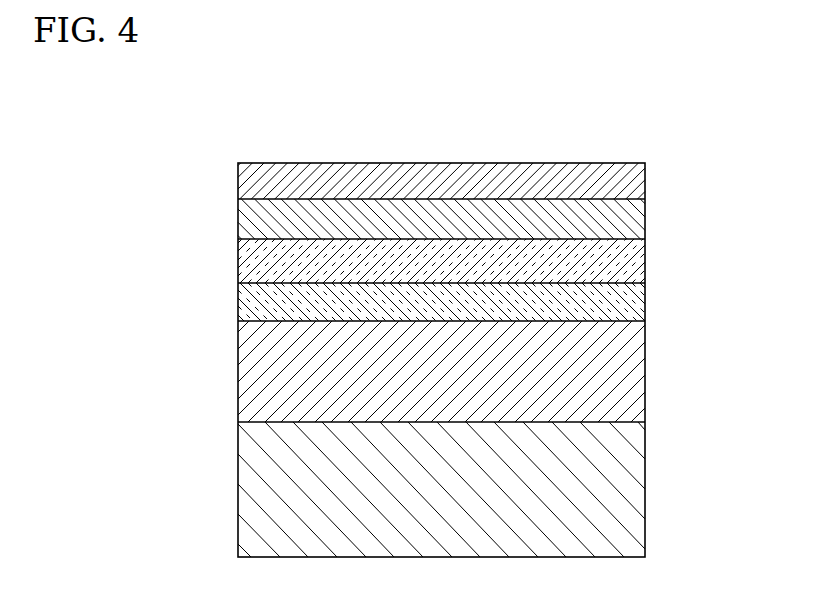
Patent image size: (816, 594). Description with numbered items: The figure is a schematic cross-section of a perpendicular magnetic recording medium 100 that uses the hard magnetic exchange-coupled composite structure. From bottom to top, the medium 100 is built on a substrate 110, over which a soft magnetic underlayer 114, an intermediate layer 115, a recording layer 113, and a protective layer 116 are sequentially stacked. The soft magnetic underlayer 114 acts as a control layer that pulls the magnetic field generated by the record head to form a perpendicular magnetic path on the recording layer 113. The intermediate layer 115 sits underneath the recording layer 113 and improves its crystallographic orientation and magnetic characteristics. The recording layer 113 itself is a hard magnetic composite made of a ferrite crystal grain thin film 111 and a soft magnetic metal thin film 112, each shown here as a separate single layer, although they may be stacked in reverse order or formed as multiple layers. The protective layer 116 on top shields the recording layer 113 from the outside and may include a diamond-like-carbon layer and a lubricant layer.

The perpendicular magnetic recording medium 100 is at (238, 153).
The substrate 110 is at (643, 490).
The ferrite crystal grain thin film 111 is at (643, 262).
The soft magnetic metal thin film 112 is at (645, 222).
The recording layer 113 is at (727, 212).
The soft magnetic underlayer 114 is at (643, 374).
The intermediate layer 115 is at (643, 306).
The protective layer 116 is at (643, 184).